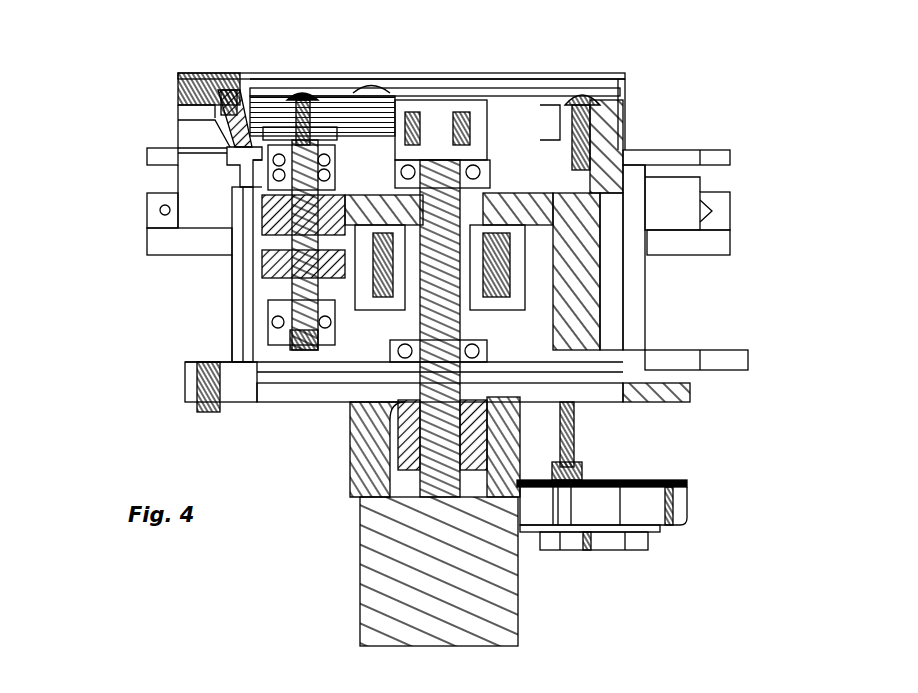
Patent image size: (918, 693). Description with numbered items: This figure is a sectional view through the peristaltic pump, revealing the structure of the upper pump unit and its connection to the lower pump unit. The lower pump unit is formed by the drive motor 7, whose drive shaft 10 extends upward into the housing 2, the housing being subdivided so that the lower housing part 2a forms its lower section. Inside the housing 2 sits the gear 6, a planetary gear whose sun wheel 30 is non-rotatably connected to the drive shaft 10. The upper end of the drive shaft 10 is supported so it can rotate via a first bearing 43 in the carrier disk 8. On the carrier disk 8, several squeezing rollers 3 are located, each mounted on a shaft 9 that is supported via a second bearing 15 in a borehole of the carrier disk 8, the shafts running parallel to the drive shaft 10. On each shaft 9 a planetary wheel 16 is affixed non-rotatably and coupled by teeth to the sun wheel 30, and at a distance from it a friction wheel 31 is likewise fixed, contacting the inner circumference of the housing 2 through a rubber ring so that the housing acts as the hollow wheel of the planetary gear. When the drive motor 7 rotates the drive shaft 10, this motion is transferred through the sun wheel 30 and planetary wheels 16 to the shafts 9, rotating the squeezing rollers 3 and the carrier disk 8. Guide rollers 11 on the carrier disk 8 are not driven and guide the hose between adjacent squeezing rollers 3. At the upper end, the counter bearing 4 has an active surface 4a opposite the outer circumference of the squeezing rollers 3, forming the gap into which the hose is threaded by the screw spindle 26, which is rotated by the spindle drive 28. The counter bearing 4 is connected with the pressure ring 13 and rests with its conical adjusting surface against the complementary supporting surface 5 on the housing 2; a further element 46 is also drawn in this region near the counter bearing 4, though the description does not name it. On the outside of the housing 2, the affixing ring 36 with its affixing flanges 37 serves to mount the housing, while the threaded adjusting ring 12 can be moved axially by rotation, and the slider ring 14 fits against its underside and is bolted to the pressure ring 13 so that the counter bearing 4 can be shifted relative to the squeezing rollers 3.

The housing 2 is at (245, 292).
The lower housing part 2a is at (640, 290).
The squeezing rollers 3 is at (335, 95).
The counter bearing 4 is at (238, 100).
The active surface 4a is at (262, 100).
The supporting surface 5 is at (215, 140).
The gear 6 is at (300, 265).
The drive motor 7 is at (368, 590).
The carrier disk 8 is at (610, 160).
The shaft 9 is at (265, 325).
The drive shaft 10 is at (440, 125).
The guide rollers 11 is at (600, 115).
The adjusting ring 12 is at (170, 210).
The pressure ring 13 is at (197, 80).
The slider ring 14 is at (158, 240).
The second bearing 15 is at (330, 168).
The planetary wheels 16 is at (322, 212).
The screw spindle 26 is at (175, 100).
The spindle drive 28 is at (700, 447).
The sun wheel 30 is at (525, 195).
The friction wheel 31 is at (300, 240).
The affixing ring 36 is at (150, 152).
The affixing flanges 37 is at (695, 150).
The first bearing 43 is at (500, 180).
The seal 46 is at (225, 125).